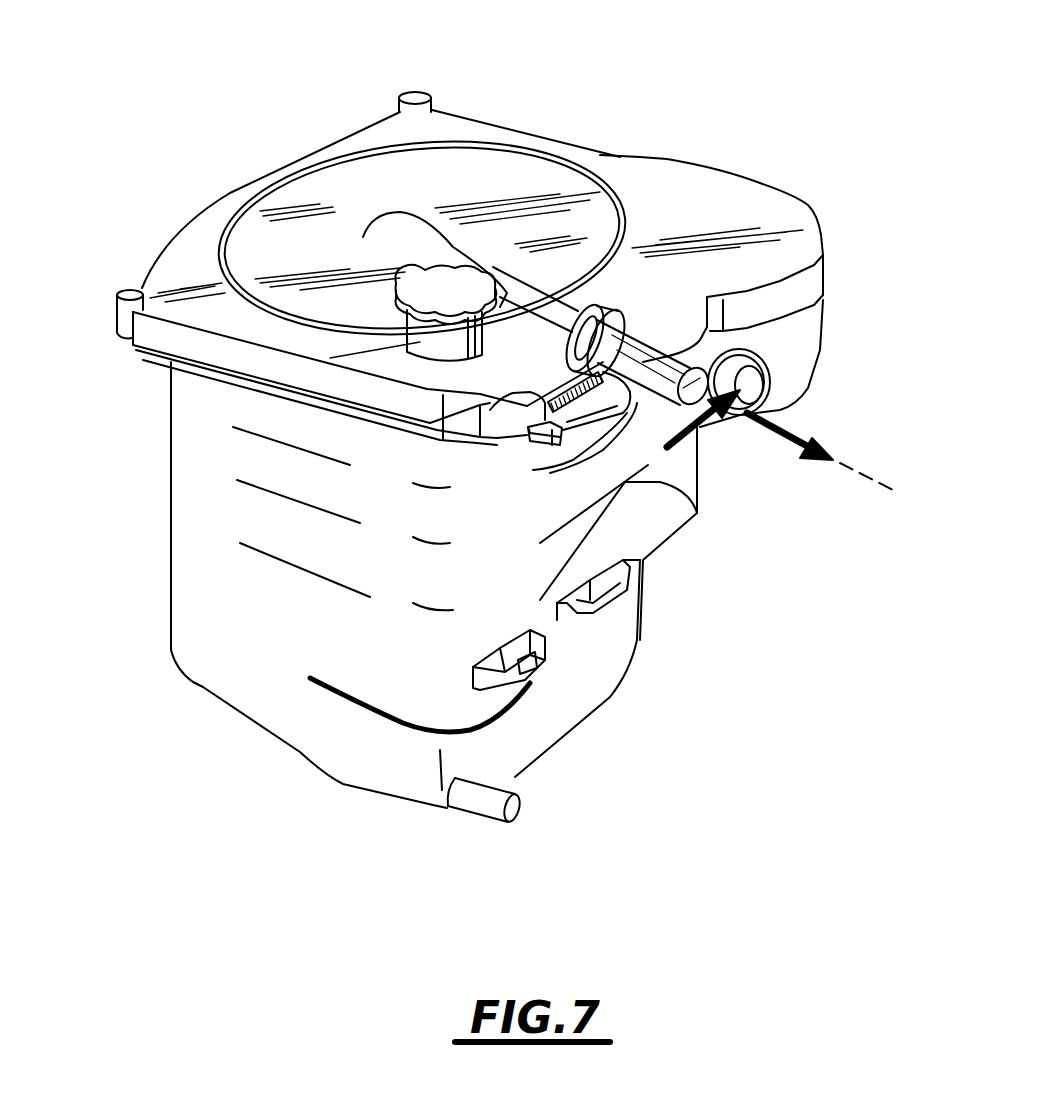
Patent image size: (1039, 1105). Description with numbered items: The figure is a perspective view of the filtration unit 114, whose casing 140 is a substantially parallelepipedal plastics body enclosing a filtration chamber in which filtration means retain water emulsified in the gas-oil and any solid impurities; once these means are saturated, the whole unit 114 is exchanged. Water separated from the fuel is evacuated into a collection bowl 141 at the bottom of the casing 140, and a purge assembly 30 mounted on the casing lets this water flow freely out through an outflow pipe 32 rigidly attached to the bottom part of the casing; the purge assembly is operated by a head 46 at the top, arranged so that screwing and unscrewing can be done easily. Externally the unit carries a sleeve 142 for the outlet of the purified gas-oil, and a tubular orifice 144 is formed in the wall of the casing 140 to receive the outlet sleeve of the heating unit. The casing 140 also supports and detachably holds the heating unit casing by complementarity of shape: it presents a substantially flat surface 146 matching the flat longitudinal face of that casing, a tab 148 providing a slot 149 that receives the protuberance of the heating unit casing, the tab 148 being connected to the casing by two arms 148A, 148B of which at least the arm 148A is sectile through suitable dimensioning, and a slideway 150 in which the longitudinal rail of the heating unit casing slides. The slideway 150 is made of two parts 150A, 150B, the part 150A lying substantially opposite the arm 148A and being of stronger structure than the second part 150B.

The filtration unit 114 is at (238, 172).
The purge assembly 30 is at (392, 289).
The head 46 is at (438, 278).
The outflow pipe 32 is at (480, 807).
The casing 140 is at (202, 512).
The collection bowl 141 is at (313, 737).
The sleeve 142 is at (663, 357).
The tubular orifice 144 is at (780, 390).
The flat surface 146 is at (697, 513).
The tab 148 is at (562, 410).
The arm 148A is at (481, 443).
The arm 148B is at (590, 458).
The slot 149 is at (570, 410).
The slideway 150 is at (557, 677).
The first slideway part 150A is at (475, 697).
The second slideway part 150B is at (637, 590).